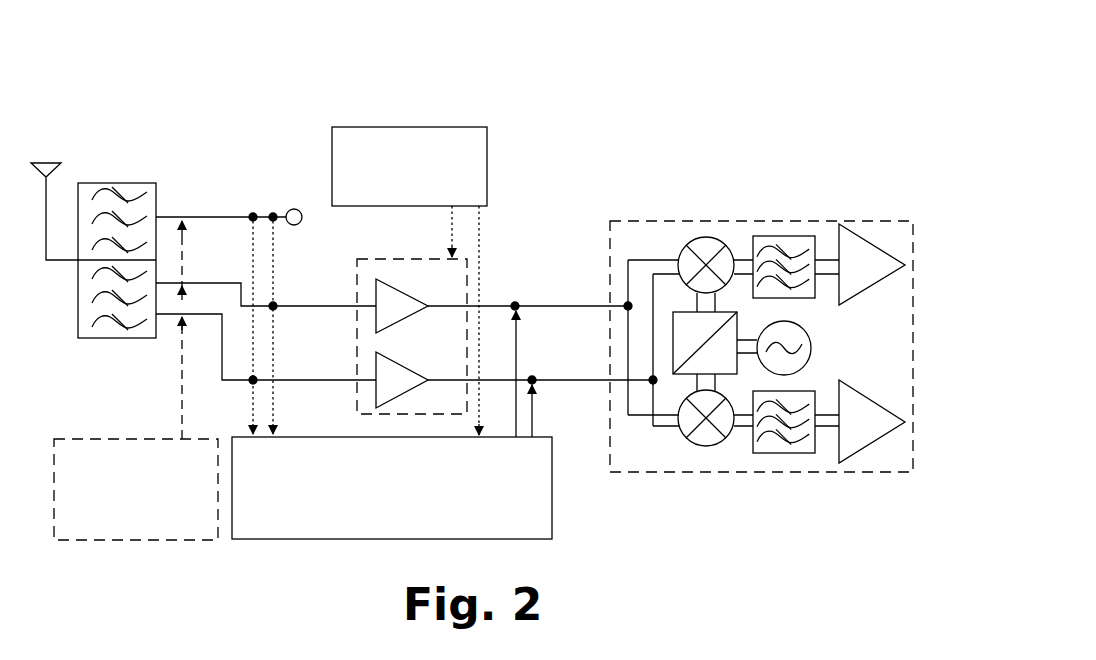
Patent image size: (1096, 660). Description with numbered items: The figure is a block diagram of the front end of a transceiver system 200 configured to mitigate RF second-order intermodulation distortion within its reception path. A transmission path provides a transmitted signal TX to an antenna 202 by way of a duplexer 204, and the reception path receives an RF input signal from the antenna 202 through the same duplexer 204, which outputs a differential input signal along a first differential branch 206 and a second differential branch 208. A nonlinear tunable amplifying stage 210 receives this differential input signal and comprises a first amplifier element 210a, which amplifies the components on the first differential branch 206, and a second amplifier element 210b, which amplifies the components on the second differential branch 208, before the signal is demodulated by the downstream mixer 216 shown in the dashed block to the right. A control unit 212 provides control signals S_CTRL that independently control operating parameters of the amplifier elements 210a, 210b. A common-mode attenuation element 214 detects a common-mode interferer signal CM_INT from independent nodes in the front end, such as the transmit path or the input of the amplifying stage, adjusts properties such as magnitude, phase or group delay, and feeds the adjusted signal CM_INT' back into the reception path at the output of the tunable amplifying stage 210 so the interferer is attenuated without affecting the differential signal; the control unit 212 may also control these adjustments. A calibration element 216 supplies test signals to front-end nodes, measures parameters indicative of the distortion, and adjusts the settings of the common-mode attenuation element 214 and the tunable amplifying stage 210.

The transceiver system 200 is at (97, 52).
The antenna 202 is at (64, 136).
The duplexer 204 is at (113, 183).
The first differential branch 206 is at (290, 305).
The second differential branch 208 is at (290, 379).
The tunable amplifying stage 210 is at (372, 258).
The first amplifier element 210a is at (389, 284).
The second amplifier element 210b is at (389, 357).
The control unit 212 is at (438, 281).
The common-mode attenuation element 214 is at (414, 425).
The calibration element 216 is at (889, 196).